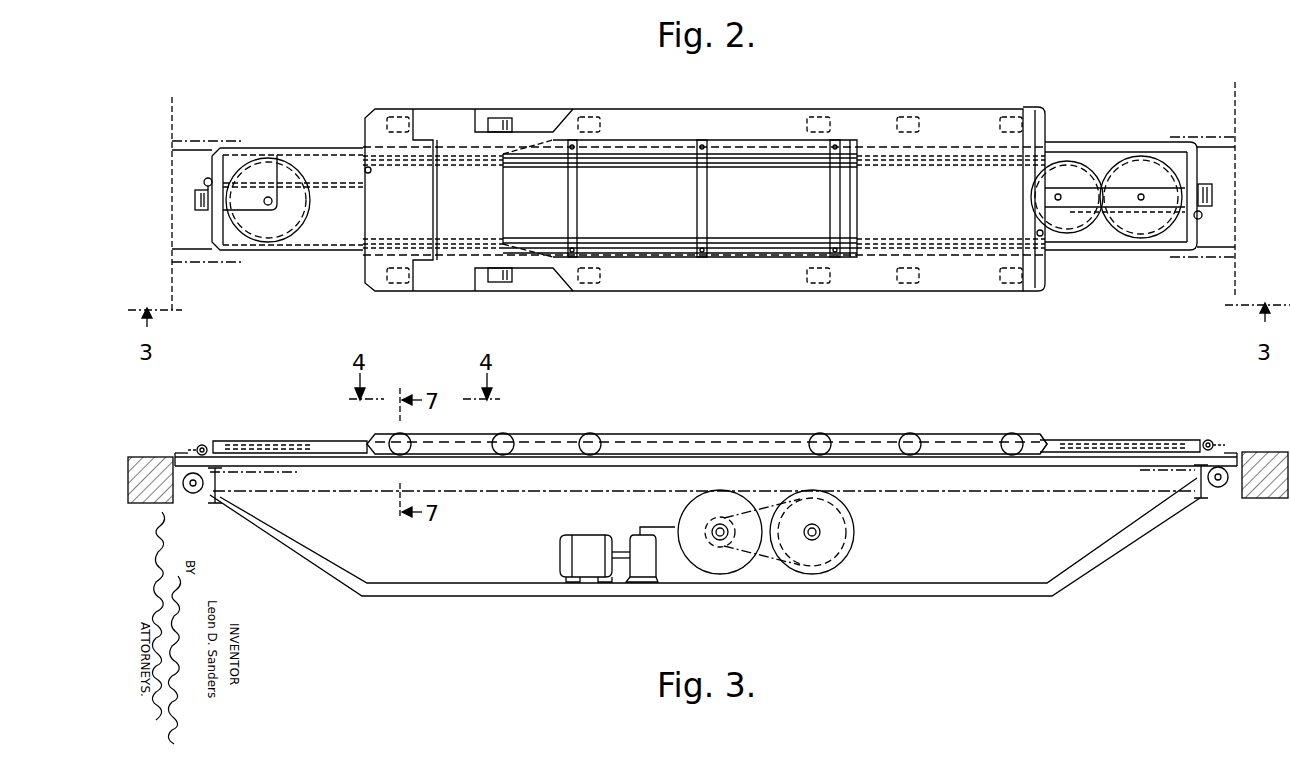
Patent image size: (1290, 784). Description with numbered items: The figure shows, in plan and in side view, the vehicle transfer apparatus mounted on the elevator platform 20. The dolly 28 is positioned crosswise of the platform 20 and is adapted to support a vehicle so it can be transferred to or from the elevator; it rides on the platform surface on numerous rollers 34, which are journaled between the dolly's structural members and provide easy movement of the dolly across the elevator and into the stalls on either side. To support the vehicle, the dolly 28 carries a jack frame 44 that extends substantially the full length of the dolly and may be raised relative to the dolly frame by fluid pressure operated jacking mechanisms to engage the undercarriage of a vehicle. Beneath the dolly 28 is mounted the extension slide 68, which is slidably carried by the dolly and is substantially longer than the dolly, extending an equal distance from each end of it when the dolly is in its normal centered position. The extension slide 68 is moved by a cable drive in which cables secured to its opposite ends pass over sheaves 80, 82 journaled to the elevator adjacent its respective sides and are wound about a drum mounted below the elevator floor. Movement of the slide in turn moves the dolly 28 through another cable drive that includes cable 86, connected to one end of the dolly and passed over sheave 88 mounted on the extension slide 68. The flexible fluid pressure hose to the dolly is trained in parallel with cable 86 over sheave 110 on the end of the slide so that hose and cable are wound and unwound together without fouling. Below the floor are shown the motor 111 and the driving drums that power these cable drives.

In FIG. 2, the platform 20 is at (1237, 268).
In FIG. 3, the platform 20 is at (465, 465).
In FIG. 2, the dolly 28 is at (1042, 100).
In FIG. 3, the dolly 28 is at (1030, 424).
In FIG. 2, the rollers 34 is at (512, 282).
In FIG. 2, the jack frame 44 is at (622, 108).
In FIG. 3, the jack frame 44 is at (707, 444).
In FIG. 2, the extension slide 68 is at (1118, 252).
In FIG. 3, the extension slide 68 is at (1138, 439).
In FIG. 3, the sheave 80 is at (1220, 488).
In FIG. 3, the sheave 82 is at (192, 493).
In FIG. 2, the cable 86 is at (322, 188).
In FIG. 2, the sheave 88 is at (1085, 162).
In FIG. 2, the sheave 110 is at (1163, 160).
In FIG. 3, the motor 111 is at (628, 540).